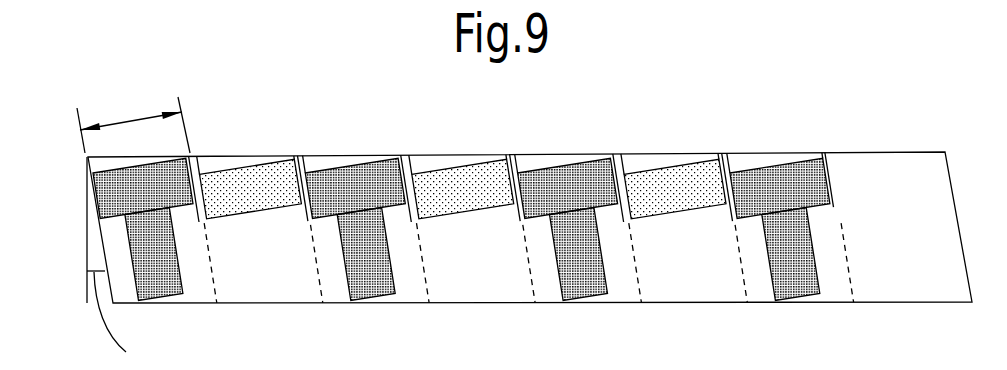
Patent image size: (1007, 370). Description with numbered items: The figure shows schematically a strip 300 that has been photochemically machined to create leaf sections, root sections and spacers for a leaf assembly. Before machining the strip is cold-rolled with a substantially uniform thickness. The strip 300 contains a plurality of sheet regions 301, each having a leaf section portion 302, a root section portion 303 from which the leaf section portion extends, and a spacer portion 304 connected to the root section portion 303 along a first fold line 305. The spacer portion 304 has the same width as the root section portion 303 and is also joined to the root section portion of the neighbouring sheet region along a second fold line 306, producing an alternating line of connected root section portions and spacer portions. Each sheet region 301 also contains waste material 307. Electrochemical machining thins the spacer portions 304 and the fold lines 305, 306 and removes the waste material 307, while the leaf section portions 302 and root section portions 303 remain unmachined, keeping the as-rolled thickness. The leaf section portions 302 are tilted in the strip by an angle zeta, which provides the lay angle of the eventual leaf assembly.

The strip 300 is at (664, 129).
The sheet region 301 is at (500, 142).
The leaf section portion 302 is at (374, 287).
The root section portion 303 is at (296, 185).
The spacer portion 304 is at (482, 186).
The first fold line 305 is at (420, 255).
The second fold line 306 is at (527, 255).
The waste material 307 is at (273, 280).